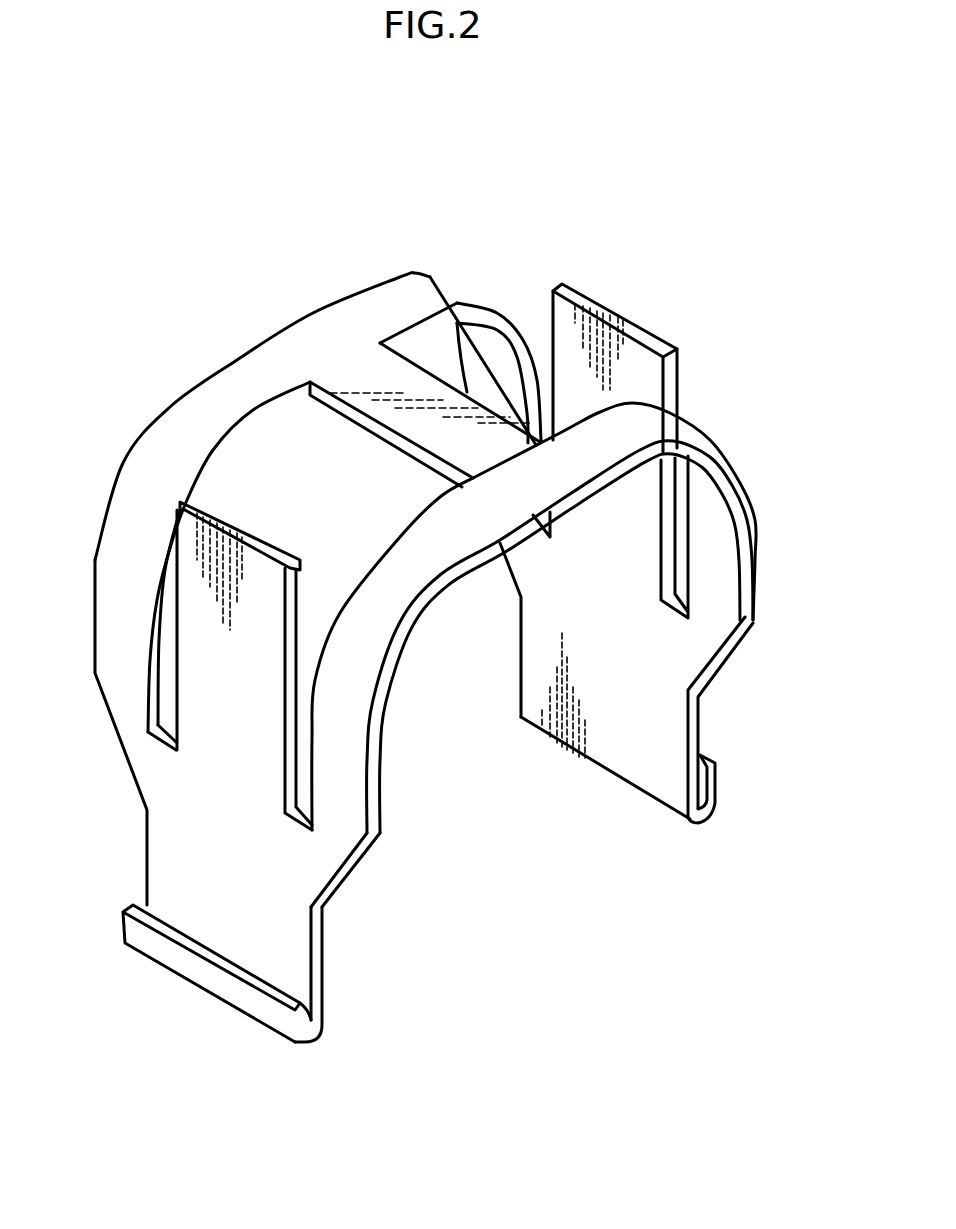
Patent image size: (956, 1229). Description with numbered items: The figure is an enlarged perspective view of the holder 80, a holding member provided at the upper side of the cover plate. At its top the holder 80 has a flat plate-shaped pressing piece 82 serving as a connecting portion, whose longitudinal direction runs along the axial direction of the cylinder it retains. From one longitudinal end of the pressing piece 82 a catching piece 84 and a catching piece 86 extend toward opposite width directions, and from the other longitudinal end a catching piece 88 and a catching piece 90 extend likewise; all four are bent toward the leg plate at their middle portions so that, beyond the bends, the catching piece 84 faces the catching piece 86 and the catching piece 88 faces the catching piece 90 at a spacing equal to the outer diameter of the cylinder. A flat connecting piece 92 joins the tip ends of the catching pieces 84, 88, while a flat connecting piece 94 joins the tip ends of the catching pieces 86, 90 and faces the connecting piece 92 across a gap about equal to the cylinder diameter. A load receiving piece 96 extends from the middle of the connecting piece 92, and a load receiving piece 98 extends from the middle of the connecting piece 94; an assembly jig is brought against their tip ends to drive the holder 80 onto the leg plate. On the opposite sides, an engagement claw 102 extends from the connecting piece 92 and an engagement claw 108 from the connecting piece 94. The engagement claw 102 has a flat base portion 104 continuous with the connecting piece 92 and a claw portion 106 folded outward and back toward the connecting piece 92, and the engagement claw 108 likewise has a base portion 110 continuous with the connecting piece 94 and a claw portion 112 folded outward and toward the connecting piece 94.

The holder 80 is at (593, 216).
The pressing piece 82 is at (420, 393).
The catching piece 84 is at (232, 380).
The catching piece 86 is at (400, 290).
The catching piece 88 is at (460, 535).
The catching piece 90 is at (678, 427).
The connecting piece 92 is at (330, 867).
The connecting piece 94 is at (710, 650).
The load receiving piece 96 is at (257, 567).
The load receiving piece 98 is at (625, 347).
The engagement claw 102 is at (326, 958).
The base portion 104 is at (165, 877).
The claw portion 106 is at (233, 988).
The engagement claw 108 is at (638, 767).
The base portion 110 is at (598, 745).
The claw portion 112 is at (718, 771).